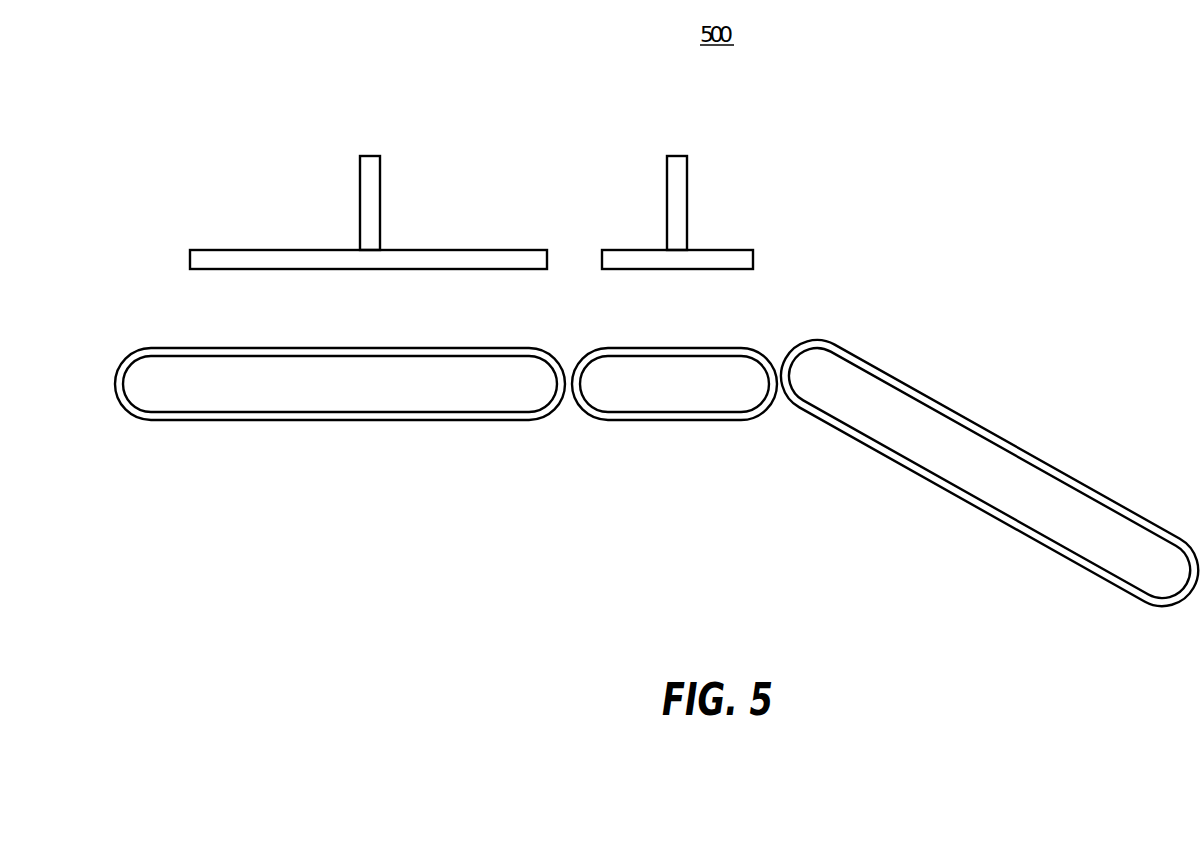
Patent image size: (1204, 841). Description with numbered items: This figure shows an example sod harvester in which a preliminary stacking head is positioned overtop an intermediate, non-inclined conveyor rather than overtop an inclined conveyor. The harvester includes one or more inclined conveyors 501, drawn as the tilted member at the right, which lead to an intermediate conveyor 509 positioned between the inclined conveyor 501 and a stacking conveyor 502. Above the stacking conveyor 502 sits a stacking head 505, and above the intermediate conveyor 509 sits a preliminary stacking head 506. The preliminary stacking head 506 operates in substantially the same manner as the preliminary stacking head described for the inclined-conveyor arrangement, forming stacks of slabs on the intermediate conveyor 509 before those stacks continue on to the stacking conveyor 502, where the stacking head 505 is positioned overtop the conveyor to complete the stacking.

The inclined conveyor 501 is at (863, 440).
The stacking conveyor 502 is at (397, 420).
The stacking head 505 is at (360, 193).
The preliminary stacking head 506 is at (667, 200).
The intermediate conveyor 509 is at (640, 420).